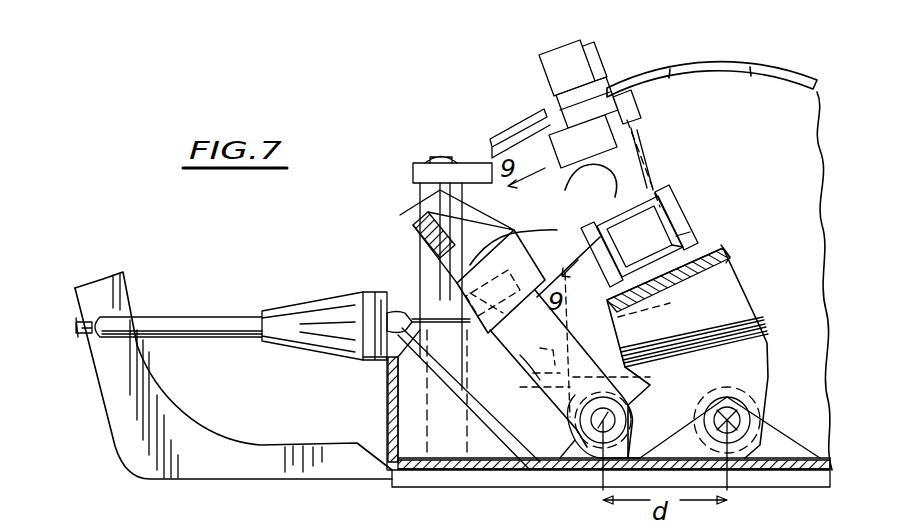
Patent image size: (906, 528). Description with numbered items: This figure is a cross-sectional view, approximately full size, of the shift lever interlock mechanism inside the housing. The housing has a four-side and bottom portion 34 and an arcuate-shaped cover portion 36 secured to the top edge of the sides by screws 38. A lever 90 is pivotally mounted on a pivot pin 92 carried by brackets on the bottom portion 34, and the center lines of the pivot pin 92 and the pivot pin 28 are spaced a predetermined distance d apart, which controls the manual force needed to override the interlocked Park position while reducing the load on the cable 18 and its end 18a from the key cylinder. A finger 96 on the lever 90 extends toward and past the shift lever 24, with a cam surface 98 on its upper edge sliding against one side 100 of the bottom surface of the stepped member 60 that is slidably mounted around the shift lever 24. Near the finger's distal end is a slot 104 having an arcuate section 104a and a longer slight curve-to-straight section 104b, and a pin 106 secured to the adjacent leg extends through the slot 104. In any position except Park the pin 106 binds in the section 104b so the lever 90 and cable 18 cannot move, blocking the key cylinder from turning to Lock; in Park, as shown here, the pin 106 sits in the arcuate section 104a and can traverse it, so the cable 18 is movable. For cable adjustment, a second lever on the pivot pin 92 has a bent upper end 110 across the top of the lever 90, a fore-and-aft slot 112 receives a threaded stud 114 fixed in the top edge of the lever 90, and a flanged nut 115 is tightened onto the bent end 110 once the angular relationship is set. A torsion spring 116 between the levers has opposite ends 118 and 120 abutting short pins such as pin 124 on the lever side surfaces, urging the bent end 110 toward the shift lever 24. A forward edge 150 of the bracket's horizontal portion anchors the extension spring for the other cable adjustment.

The cable 18 is at (82, 337).
The rod 18a is at (200, 317).
The shift lever 24 is at (592, 52).
The pivot pin 28 is at (752, 410).
The bottom portion 34 is at (388, 398).
The cover portion 36 is at (803, 74).
The screws 38 is at (445, 155).
The stepped member 60 is at (640, 106).
The lever 90 is at (512, 365).
The pivot pin 92 is at (593, 418).
The finger 96 is at (505, 235).
The cam surface 98 is at (550, 118).
The side of bottom surface 100 is at (615, 152).
The slot 104 is at (560, 195).
The arcuate section 104a is at (600, 223).
The slight curve-to-straight section 104b is at (718, 189).
The pin 106 is at (565, 238).
The bent upper end 110 is at (418, 190).
The slot 112 is at (455, 262).
The threaded stud 114 is at (400, 292).
The flanged nut 115 is at (420, 228).
The torsion spring 116 is at (583, 443).
The spring end 118 is at (536, 397).
The spring end 120 is at (601, 345).
The short pin 124 is at (713, 353).
The forward edge 150 is at (728, 256).